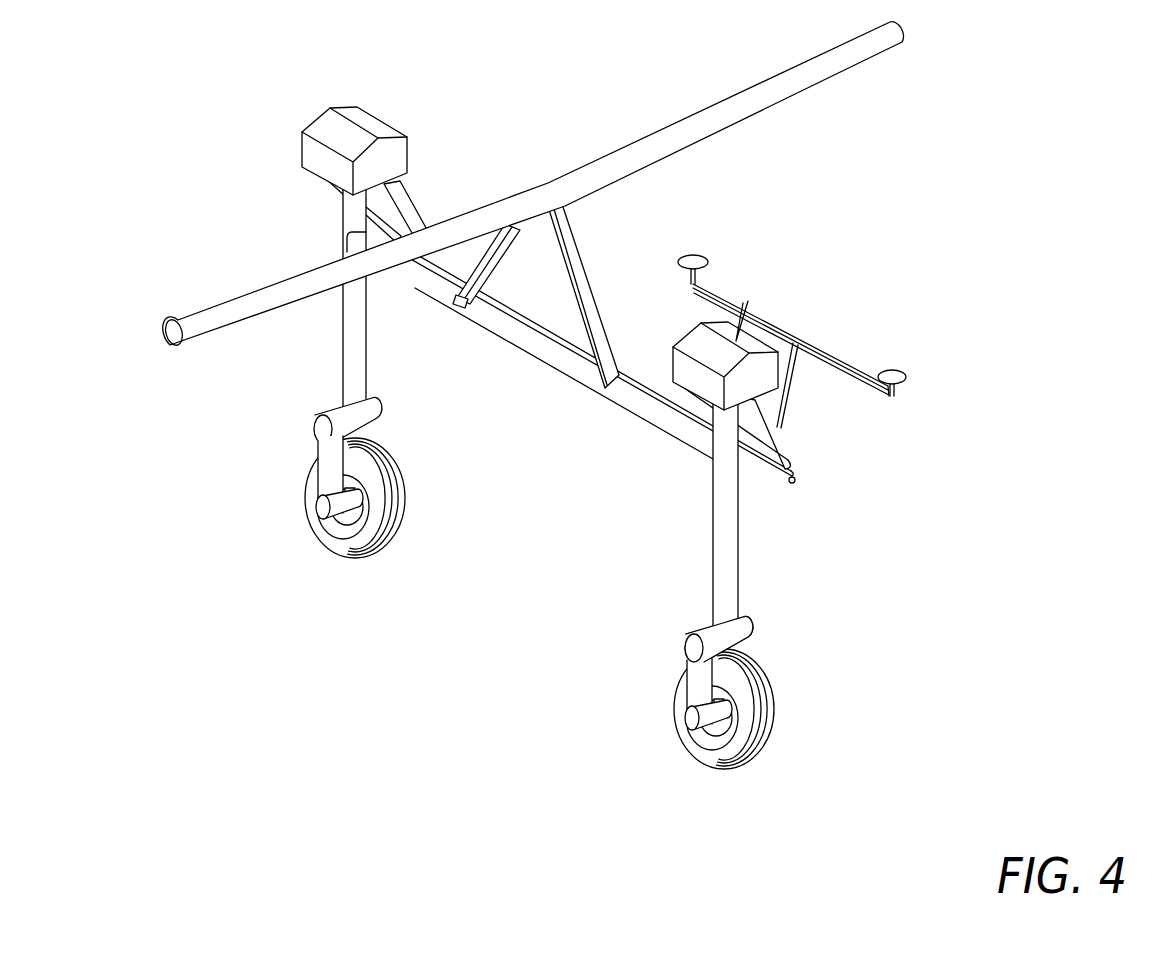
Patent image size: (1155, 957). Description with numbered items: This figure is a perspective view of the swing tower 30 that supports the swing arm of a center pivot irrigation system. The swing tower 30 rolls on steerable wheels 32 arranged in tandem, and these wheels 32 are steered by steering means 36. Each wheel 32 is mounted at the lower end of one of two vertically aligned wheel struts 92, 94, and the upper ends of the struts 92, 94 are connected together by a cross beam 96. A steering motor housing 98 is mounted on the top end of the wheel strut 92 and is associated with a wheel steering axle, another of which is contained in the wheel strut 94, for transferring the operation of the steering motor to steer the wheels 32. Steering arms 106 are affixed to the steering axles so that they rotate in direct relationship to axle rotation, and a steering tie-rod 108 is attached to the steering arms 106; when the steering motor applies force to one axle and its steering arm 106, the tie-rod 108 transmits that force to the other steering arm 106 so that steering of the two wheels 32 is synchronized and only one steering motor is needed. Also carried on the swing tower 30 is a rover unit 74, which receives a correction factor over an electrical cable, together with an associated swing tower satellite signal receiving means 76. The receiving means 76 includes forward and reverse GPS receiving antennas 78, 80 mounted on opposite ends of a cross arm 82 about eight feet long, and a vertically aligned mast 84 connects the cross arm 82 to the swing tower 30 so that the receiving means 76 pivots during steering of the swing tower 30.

The swing tower 30 is at (739, 580).
The wheels 32 is at (392, 473).
The steering means 36 is at (783, 435).
The rover unit 74 is at (735, 333).
The swing tower satellite signal receiving means 76 is at (848, 342).
The forward GPS receiving antenna 78 is at (897, 368).
The reverse GPS receiving antenna 80 is at (698, 253).
The cross arm 82 is at (720, 288).
The mast 84 is at (822, 385).
The wheel strut 92 is at (740, 520).
The wheel strut 94 is at (368, 350).
The cross beam 96 is at (640, 403).
The steering motor housing 98 is at (752, 348).
The steering arms 106 is at (402, 207).
The steering tie-rod 108 is at (548, 343).